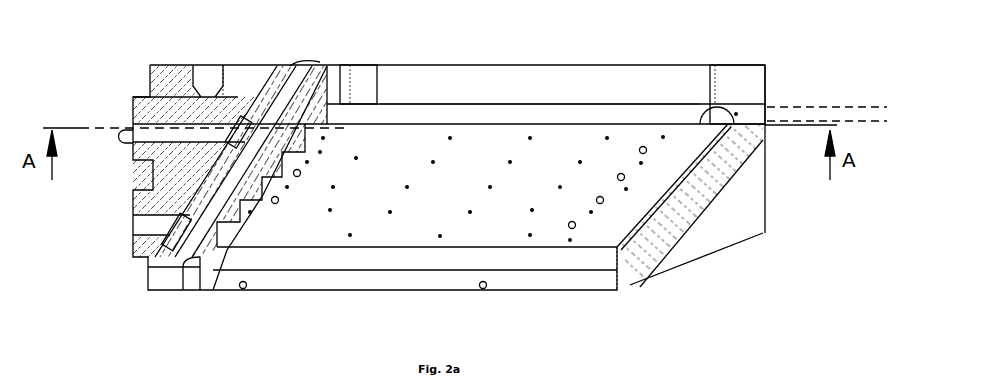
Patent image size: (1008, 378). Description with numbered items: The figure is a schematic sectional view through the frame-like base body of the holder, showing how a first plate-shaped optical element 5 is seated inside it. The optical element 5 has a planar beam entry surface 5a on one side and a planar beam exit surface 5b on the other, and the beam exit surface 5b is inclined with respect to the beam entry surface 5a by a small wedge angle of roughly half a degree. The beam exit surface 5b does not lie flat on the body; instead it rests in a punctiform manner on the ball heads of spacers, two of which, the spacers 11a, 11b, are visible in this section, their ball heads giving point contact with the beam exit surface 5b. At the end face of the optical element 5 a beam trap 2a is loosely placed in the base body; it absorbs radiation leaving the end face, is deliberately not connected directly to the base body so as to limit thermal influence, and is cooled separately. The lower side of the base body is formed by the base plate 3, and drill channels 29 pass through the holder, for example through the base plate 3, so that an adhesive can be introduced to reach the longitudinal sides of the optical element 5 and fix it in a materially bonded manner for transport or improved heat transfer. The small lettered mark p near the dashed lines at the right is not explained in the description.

The beam trap 2a is at (312, 92).
The base plate 3 is at (292, 230).
The first plate-shaped optical element 5 is at (567, 117).
The beam entry surface 5a is at (503, 103).
The beam exit surface 5b is at (662, 127).
The spacer 11a is at (340, 130).
The spacer 11b is at (720, 67).
The drill channel 29 is at (672, 193).
The flow direction p is at (850, 113).